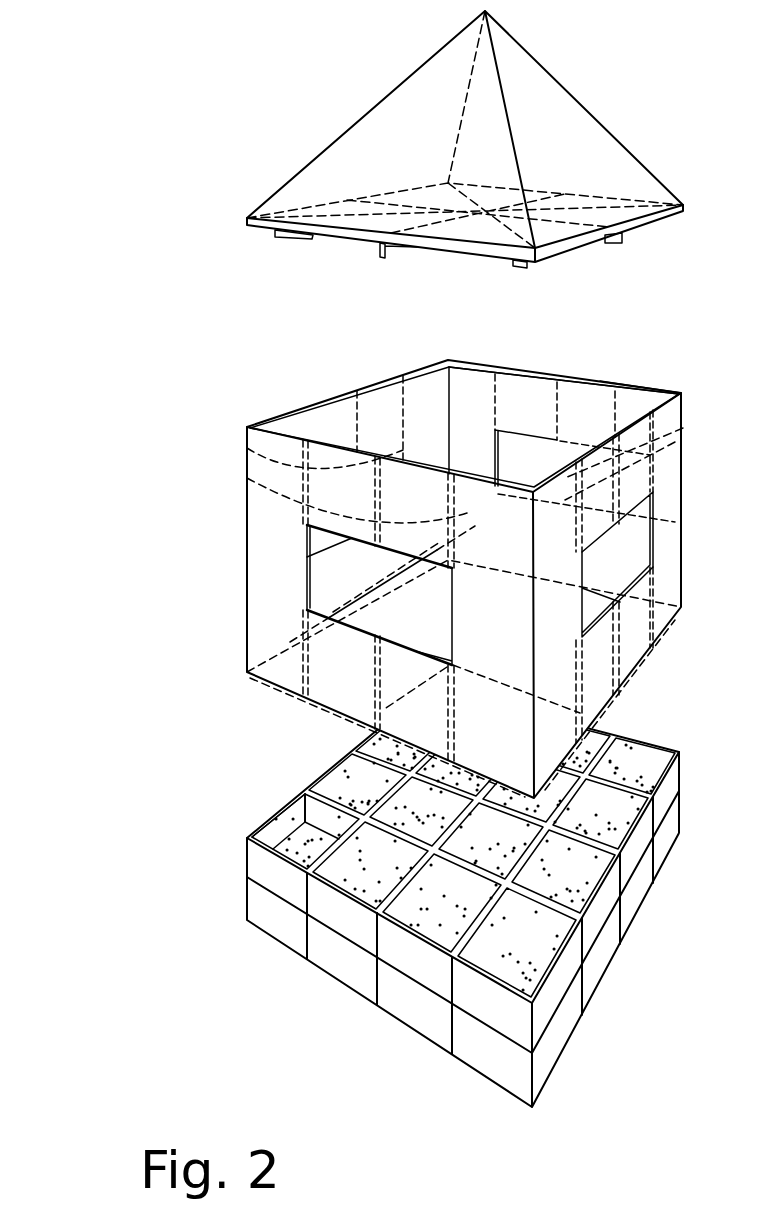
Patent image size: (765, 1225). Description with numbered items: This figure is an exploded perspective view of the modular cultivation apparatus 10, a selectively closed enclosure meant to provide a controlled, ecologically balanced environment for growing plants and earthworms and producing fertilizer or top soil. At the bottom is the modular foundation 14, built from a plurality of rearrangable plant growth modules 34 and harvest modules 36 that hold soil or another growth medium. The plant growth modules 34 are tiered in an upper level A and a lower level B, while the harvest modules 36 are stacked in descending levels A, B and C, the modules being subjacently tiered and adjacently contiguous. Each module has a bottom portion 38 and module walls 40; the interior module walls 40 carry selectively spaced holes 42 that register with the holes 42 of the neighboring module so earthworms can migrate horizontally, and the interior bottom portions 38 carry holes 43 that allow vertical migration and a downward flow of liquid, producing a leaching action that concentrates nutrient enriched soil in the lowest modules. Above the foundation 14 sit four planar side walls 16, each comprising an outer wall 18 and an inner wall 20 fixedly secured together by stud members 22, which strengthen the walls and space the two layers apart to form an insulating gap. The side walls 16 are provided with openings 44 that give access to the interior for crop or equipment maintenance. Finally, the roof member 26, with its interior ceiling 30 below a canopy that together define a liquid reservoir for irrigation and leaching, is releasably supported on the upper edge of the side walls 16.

The modular cultivation apparatus 10 is at (204, 80).
The modular foundation 14 is at (441, 919).
The side walls 16 is at (452, 558).
The outer wall 18 is at (645, 390).
The inner wall 20 is at (587, 396).
The stud members 22 is at (672, 440).
The roof member 26 is at (591, 95).
The interior ceiling 30 is at (658, 223).
The plant growth modules 34 is at (672, 815).
The harvest modules 36 is at (607, 920).
The bottom portion 38 is at (297, 808).
The module walls 40 is at (300, 817).
The holes 42 is at (362, 768).
The holes 43 is at (263, 835).
The openings 44 is at (633, 567).
The upper level A is at (365, 940).
The lower level B is at (420, 993).
The lowest level C is at (440, 1033).